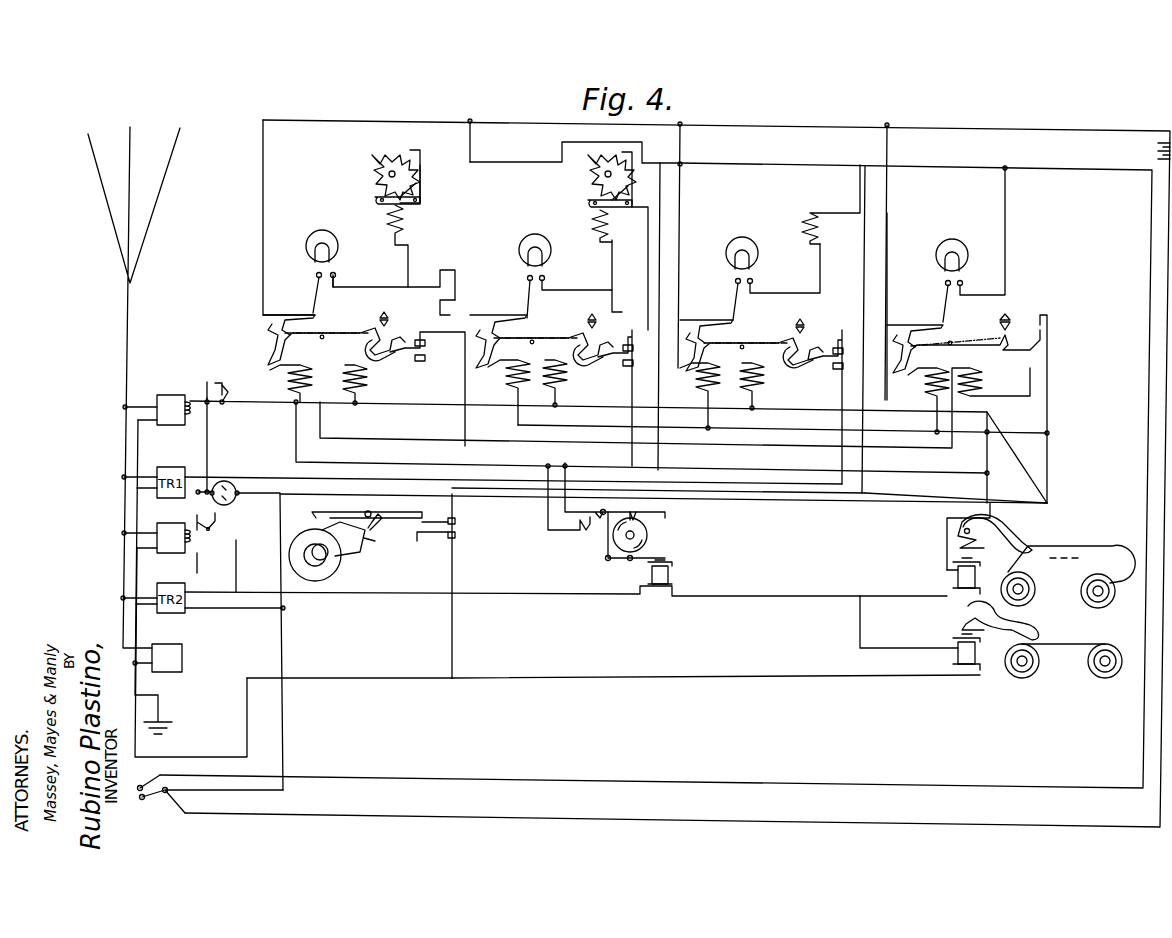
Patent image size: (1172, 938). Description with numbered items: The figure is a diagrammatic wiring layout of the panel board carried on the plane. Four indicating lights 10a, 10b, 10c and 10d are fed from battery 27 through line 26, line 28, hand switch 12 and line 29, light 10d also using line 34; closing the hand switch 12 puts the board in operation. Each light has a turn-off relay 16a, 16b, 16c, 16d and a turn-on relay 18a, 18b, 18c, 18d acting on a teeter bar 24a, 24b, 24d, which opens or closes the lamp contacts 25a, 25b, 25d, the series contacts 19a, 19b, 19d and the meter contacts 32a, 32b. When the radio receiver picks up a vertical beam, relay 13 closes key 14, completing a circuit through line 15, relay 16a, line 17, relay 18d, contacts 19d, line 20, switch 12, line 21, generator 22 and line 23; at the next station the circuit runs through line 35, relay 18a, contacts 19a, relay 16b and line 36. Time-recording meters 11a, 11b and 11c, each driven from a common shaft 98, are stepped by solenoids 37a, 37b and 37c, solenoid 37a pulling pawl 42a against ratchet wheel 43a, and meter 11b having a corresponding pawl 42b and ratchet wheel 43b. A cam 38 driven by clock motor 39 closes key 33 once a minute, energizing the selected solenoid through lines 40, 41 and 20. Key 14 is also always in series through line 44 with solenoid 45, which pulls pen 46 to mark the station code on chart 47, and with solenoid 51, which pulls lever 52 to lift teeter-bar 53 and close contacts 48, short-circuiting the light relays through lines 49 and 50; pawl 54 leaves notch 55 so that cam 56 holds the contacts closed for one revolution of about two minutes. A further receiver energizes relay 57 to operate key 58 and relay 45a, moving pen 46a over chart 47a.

The common shaft 98 is at (395, 160).
The meter 11a is at (352, 158).
The meter 11b is at (572, 176).
The meter 11c is at (807, 187).
The pawl 42a is at (428, 178).
The pawl b 42b is at (640, 180).
The ratchet wheel 43a is at (380, 185).
The pawl arm b 43b is at (590, 195).
The line 26 is at (263, 222).
The battery 27 is at (1158, 151).
The line 29 is at (368, 292).
The solenoid 37a is at (390, 222).
The solenoid 37b is at (596, 232).
The solenoid 37c is at (805, 232).
The light 10a is at (318, 228).
The light 10b is at (528, 230).
The light 10c is at (736, 233).
The light 10d is at (940, 229).
The line 34 is at (887, 230).
The contacts 25a is at (285, 305).
The contacts 25b is at (490, 315).
The contacts 25d is at (912, 308).
The teeter bar 24a is at (310, 330).
The teeter bar 24b is at (522, 335).
The teeter bar 24d is at (956, 340).
The contacts 32a is at (398, 308).
The contacts 32b is at (600, 308).
The contacts 19a is at (396, 350).
The contacts 19b is at (606, 362).
The contacts 19d is at (1020, 318).
The line 15 is at (240, 370).
The turn-off relay 16a is at (292, 372).
The turn-off relay 16b is at (506, 372).
The turn-off relay 16c is at (696, 378).
The turn-off relay 16d is at (925, 388).
The turn-on relay 18a is at (372, 393).
The turn-on relay 18b is at (562, 381).
The turn-on relay 18c is at (760, 385).
The turn-on relay 18d is at (980, 380).
The key 14 is at (220, 410).
The line 35 is at (262, 412).
The line 36 is at (500, 420).
The relay 13 is at (159, 425).
The line 17 is at (380, 447).
The line 23 is at (210, 450).
The generator 22 is at (232, 484).
The line 49 is at (345, 452).
The line 50 is at (935, 470).
The line 20 is at (1050, 448).
The line 44 is at (1000, 490).
The clock motor 39 is at (378, 547).
The automatically operated key 33 is at (415, 528).
The key 58 is at (215, 538).
The cam 38 is at (345, 567).
The relay 57 is at (160, 549).
The teeter-bar 53 is at (600, 510).
The pawl 54 is at (648, 512).
The notch 55 is at (660, 518).
The contacts 48 is at (590, 532).
The cam 56 is at (610, 533).
The lever 52 is at (598, 560).
The solenoid 51 is at (672, 570).
The pen 46 is at (1020, 530).
The chart 47 is at (1100, 550).
The solenoid 45 is at (953, 578).
The pen 46a is at (1050, 615).
The relay 45a is at (953, 665).
The chart 47a is at (1065, 662).
The line 40 is at (470, 645).
The line 41 is at (372, 678).
The line 21 is at (247, 685).
The hand switch 12 is at (211, 797).
The line 28 is at (575, 820).